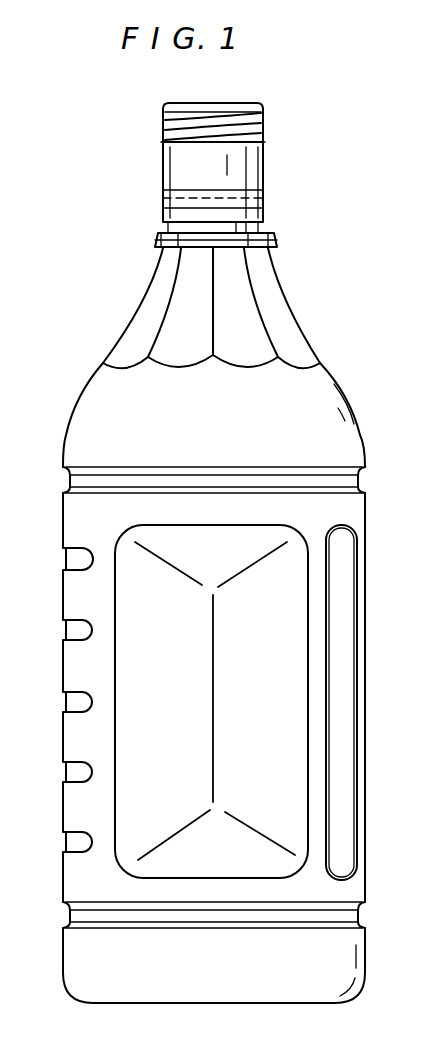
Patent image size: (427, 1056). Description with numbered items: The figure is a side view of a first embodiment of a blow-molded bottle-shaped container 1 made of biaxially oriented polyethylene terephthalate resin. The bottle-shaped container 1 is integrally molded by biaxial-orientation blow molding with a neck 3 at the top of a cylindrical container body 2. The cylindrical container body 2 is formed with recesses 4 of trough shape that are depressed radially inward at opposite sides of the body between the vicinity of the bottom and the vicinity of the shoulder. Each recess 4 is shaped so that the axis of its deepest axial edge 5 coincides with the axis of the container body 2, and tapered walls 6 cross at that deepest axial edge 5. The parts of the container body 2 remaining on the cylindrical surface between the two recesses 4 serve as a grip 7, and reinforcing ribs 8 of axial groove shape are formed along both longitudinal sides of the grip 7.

The bottle-shaped container 1 is at (62, 535).
The cylindrical container body 2 is at (76, 603).
The neck 3 is at (262, 230).
The recesses 4 is at (195, 803).
The deepest axial edge 5 is at (212, 783).
The tapered walls 6 is at (140, 695).
The grip 7 is at (355, 518).
The reinforcing ribs 8 is at (350, 817).